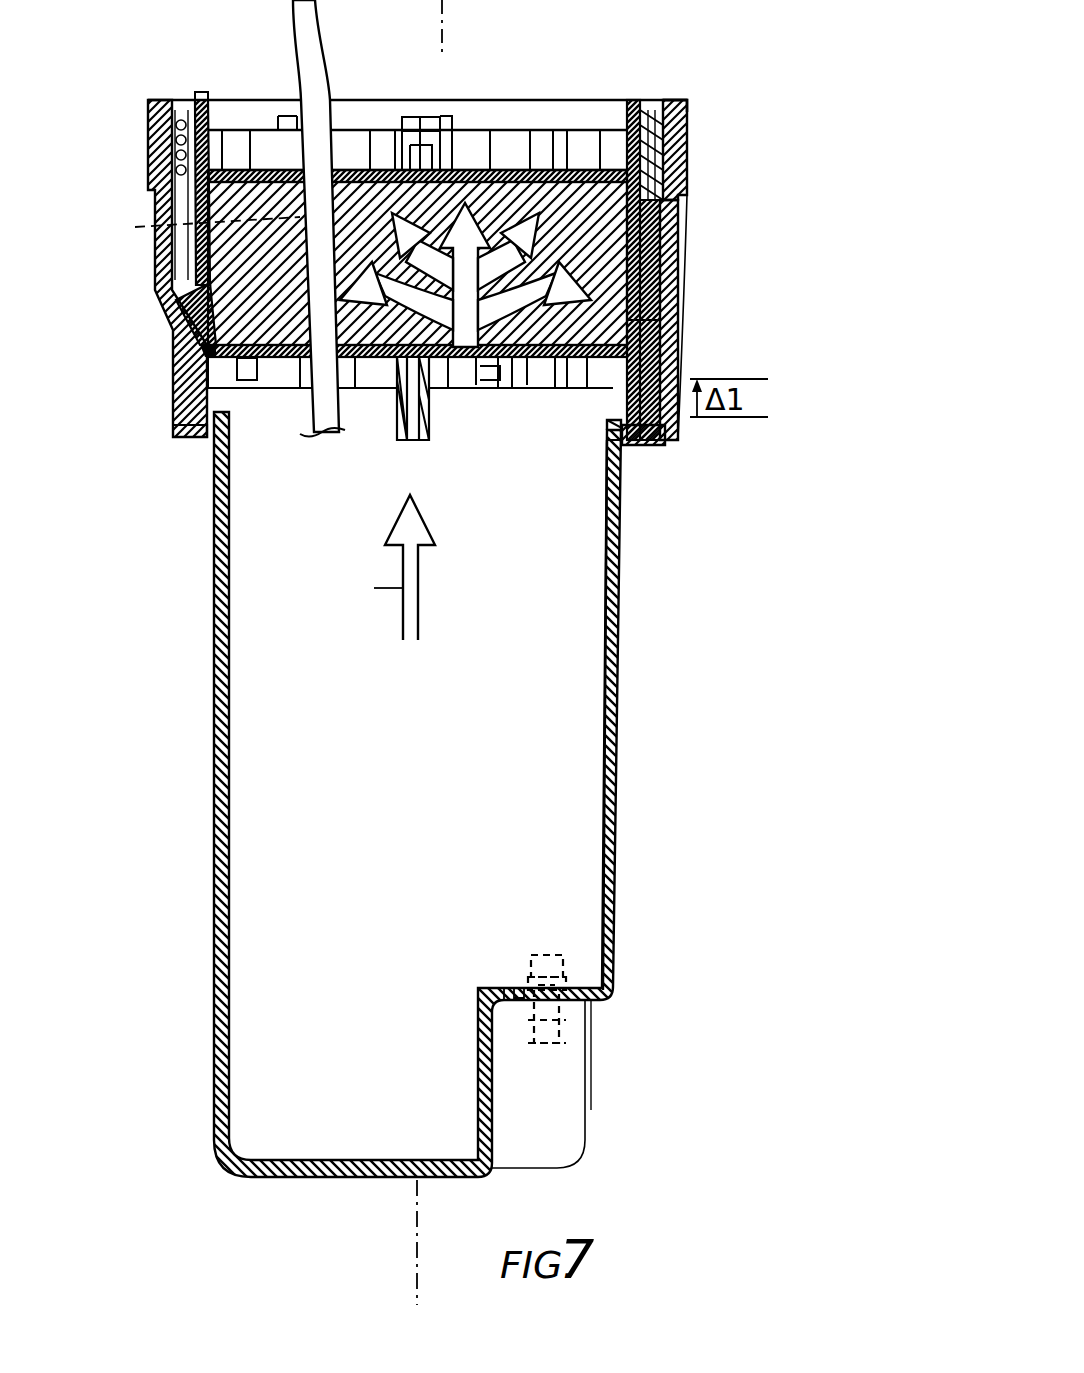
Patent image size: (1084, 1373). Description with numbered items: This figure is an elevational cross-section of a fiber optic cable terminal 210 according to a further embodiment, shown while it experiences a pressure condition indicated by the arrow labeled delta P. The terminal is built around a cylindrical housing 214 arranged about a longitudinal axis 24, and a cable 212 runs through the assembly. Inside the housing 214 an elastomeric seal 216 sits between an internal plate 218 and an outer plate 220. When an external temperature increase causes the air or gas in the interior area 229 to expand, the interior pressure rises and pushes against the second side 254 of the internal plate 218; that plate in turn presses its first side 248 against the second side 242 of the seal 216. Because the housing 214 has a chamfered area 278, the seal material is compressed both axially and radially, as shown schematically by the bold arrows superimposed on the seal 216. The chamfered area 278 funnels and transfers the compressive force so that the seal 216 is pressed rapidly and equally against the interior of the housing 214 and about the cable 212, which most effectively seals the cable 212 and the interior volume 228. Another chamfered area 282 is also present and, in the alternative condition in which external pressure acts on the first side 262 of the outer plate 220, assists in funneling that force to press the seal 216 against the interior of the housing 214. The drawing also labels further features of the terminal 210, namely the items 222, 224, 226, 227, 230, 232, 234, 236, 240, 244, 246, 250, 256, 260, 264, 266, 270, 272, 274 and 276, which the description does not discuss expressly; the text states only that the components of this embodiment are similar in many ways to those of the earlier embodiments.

The longitudinal axis 24 is at (417, 1222).
The fiber optic cable terminal 210 is at (812, 118).
The cable 212 is at (313, 20).
The housing 214 is at (636, 550).
The seal 216 is at (663, 306).
The internal plate 218 is at (622, 354).
The outer plate 220 is at (620, 84).
The cover side wall 222 is at (162, 384).
The central axis 224 is at (445, 42).
The housing side wall 226 is at (621, 612).
The cover top surface 227 is at (225, 100).
The interior volume 228 is at (513, 166).
The interior area 229 is at (560, 490).
The outer skirt 230 is at (688, 120).
The housing shoulder 232 is at (622, 428).
The cover lower end 234 is at (660, 445).
The drain fitting 236 is at (563, 972).
The inner skirt 240 is at (205, 203).
The second side of seal 242 is at (641, 334).
The seal 244 is at (200, 270).
The seal centerline 246 is at (150, 226).
The first side of internal plate 248 is at (478, 378).
The seal lip 250 is at (212, 303).
The second side of internal plate 254 is at (228, 363).
The tube lower end 256 is at (355, 375).
The filter element support 260 is at (216, 334).
The first side of outer plate 262 is at (690, 157).
The outer skirt lower portion 264 is at (673, 200).
The cover flange 266 is at (686, 104).
The O-ring seal 270 is at (152, 150).
The cover lower edge 272 is at (207, 438).
The inner skirt upper end 274 is at (190, 90).
The inner ledge 276 is at (667, 320).
The chamfered area 278 is at (672, 257).
The chamfered area 282 is at (673, 233).